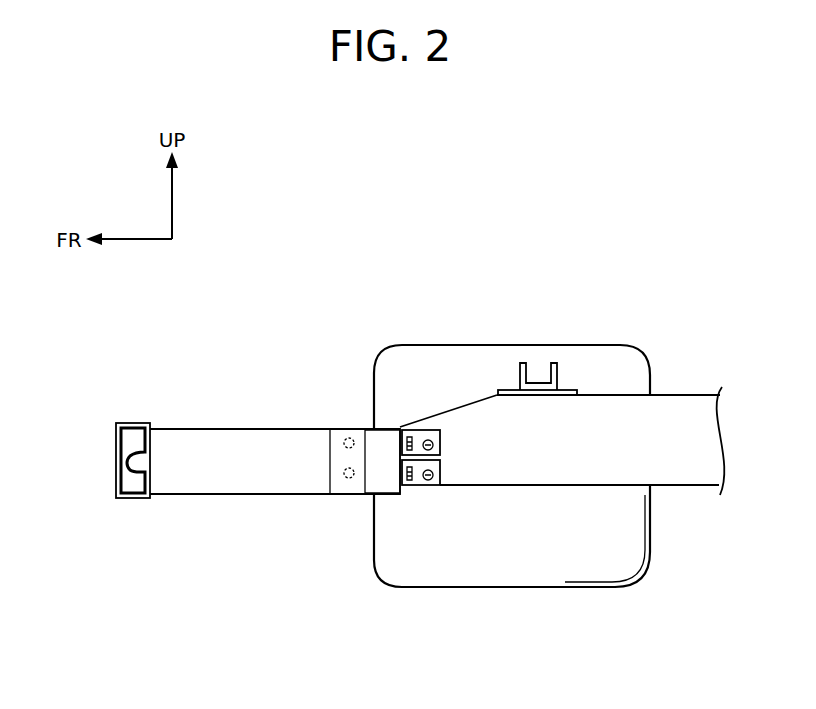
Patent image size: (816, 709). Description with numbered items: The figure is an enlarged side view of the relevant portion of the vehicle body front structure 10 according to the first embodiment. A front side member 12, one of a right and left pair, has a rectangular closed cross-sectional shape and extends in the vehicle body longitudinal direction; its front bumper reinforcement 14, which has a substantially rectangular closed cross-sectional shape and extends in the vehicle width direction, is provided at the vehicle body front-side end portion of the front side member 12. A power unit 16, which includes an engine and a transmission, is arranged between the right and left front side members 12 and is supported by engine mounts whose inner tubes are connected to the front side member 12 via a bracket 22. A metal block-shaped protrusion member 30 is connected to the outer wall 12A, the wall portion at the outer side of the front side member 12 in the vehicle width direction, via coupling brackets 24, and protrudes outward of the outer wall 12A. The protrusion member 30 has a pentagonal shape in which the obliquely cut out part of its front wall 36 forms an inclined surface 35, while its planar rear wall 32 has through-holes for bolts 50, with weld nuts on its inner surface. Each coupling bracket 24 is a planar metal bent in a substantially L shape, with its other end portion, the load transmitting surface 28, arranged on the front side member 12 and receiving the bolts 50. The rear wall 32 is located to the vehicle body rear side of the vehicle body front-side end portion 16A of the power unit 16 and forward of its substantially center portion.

The vehicle body structure 10 is at (334, 399).
The front side member 12 is at (185, 424).
The outer wall 12A is at (205, 495).
The front bumper reinforcement 14 is at (113, 462).
The power unit 16 is at (542, 578).
The vehicle body front-side end portion 16A is at (374, 404).
The bracket 22 is at (572, 390).
The coupling bracket 24 is at (433, 428).
The other end portion (load transmitting surface) 28 is at (441, 445).
The protrusion member 30 is at (361, 501).
The rear wall 32 is at (406, 487).
The inclined surface 35 is at (345, 494).
The front wall 36 is at (312, 494).
The bolt 50 is at (344, 470).